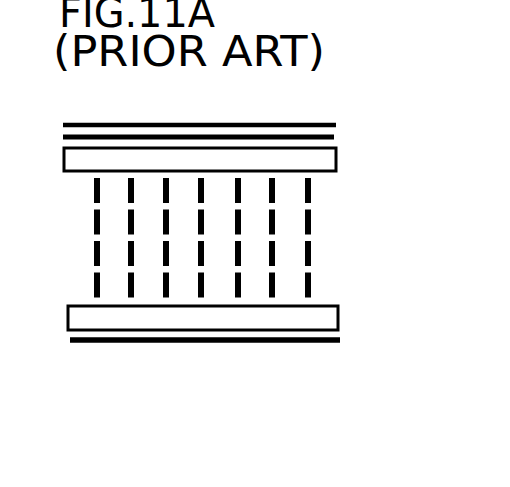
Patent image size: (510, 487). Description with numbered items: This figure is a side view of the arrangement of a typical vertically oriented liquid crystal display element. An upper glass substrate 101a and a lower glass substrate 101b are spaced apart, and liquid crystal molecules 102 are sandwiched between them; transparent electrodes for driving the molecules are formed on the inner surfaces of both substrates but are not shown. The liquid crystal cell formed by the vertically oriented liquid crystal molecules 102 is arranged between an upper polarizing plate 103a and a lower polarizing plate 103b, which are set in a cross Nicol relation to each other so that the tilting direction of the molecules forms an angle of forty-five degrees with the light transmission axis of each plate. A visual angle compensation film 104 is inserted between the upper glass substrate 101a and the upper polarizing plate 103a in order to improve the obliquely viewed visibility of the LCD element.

The upper polarizing plate 103a is at (336, 125).
The visual angle compensation film 104 is at (334, 138).
The upper glass substrate 101a is at (336, 158).
The liquid crystal molecules 102 is at (96, 228).
The lower glass substrate 101b is at (339, 322).
The lower polarizing plate 103b is at (340, 339).